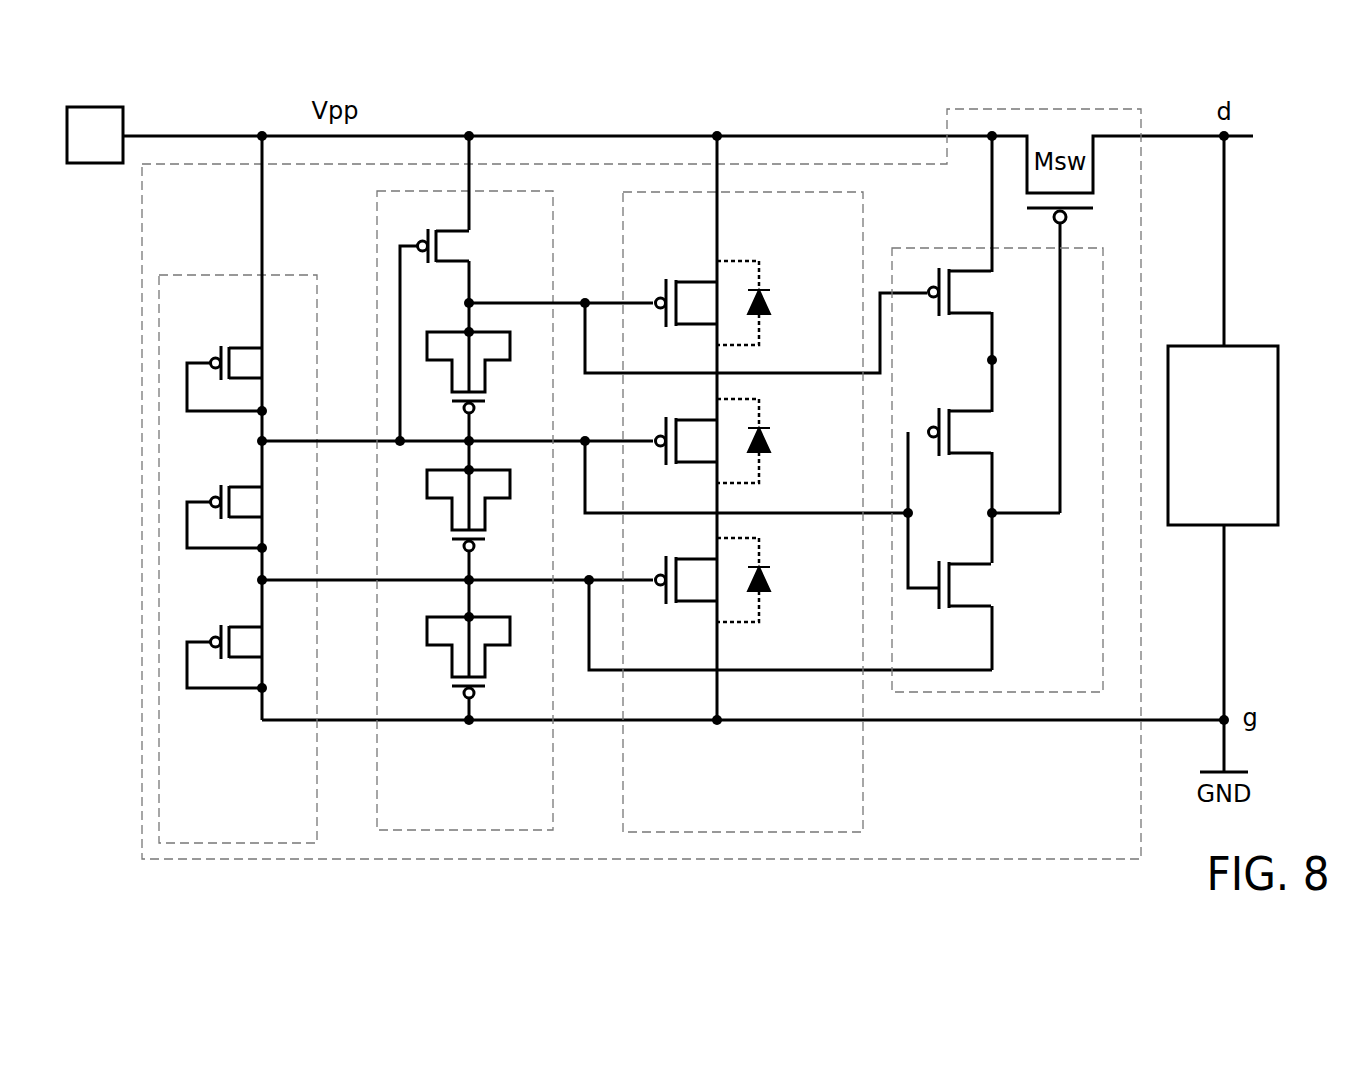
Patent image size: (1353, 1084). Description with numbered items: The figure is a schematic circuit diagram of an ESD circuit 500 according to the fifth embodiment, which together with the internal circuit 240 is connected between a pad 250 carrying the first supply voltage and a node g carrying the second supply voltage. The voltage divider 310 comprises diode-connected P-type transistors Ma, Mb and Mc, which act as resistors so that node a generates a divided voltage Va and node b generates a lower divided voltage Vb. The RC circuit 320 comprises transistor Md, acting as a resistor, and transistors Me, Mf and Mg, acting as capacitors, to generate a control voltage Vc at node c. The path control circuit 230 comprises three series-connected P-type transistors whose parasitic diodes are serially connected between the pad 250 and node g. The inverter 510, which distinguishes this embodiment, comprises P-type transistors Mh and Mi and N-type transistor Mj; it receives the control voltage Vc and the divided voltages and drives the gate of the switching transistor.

The pad 250 is at (97, 160).
The ESD circuit 500 is at (1090, 844).
The voltage divider 310 is at (269, 832).
The RC circuit 320 is at (448, 816).
The path control circuit 230 is at (708, 805).
The inverter 510 is at (1098, 683).
The internal circuit 240 is at (1199, 514).